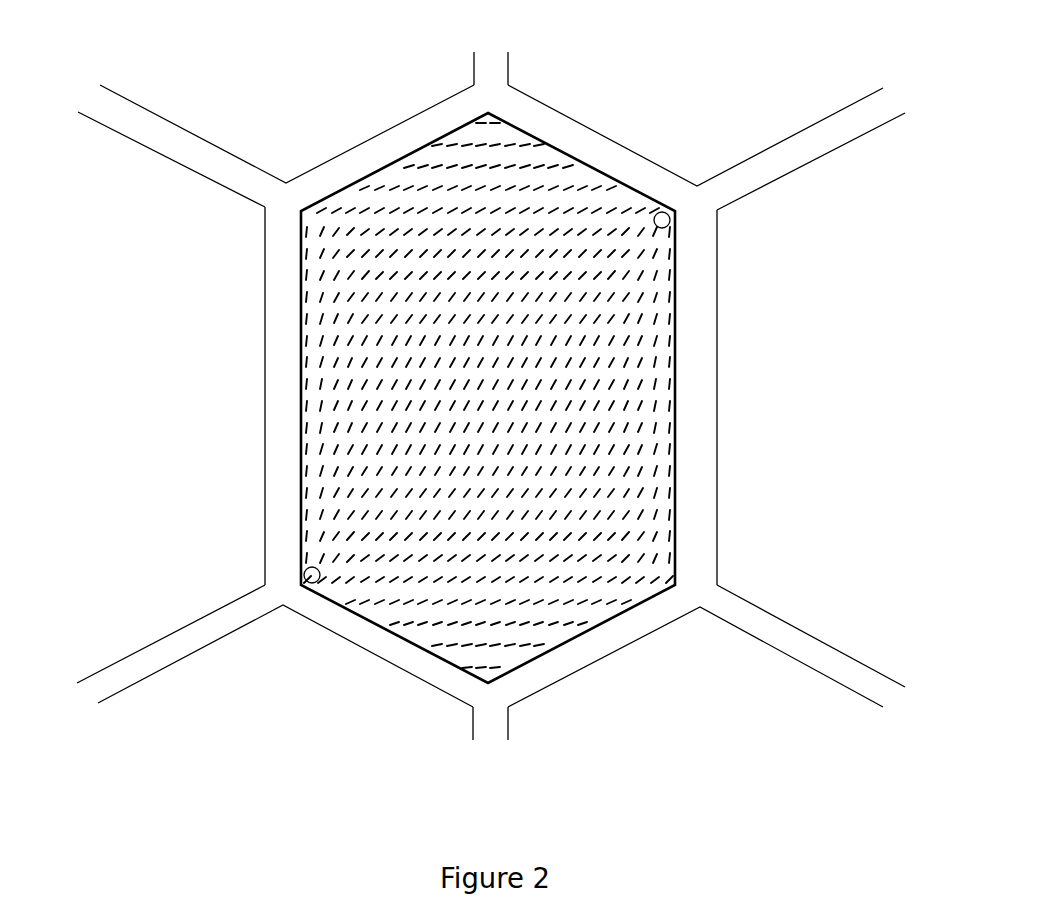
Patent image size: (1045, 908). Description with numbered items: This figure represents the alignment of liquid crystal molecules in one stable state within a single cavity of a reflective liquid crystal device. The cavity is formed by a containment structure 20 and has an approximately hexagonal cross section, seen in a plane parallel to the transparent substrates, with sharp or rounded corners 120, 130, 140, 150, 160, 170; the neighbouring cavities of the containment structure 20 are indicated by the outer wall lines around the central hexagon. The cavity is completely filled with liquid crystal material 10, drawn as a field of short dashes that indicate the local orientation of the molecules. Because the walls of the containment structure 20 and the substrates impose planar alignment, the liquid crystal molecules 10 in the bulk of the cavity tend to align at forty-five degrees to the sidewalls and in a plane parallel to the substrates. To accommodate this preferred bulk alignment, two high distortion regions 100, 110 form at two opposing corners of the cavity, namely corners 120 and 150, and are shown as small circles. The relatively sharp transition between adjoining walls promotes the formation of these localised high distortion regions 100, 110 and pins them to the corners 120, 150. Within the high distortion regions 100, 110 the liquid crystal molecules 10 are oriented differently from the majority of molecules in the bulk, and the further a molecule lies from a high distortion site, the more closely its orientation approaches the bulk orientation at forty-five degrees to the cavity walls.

The liquid crystal material 10 is at (398, 377).
The containment structure 20 is at (690, 393).
The high distortion region 100 is at (663, 207).
The high distortion region 110 is at (306, 590).
The corner 120 is at (688, 216).
The corner 130 is at (680, 596).
The corner 140 is at (487, 696).
The corner 150 is at (286, 576).
The corner 160 is at (295, 197).
The corner 170 is at (487, 102).